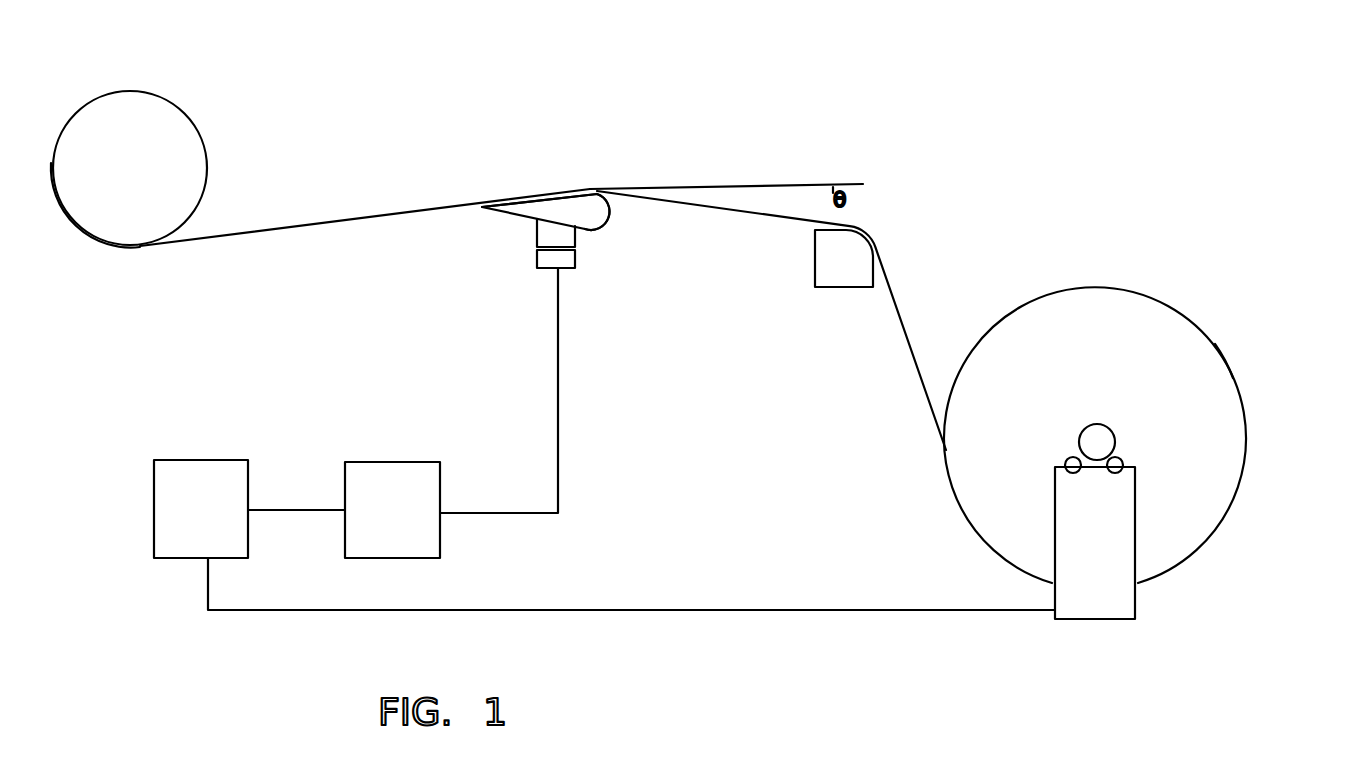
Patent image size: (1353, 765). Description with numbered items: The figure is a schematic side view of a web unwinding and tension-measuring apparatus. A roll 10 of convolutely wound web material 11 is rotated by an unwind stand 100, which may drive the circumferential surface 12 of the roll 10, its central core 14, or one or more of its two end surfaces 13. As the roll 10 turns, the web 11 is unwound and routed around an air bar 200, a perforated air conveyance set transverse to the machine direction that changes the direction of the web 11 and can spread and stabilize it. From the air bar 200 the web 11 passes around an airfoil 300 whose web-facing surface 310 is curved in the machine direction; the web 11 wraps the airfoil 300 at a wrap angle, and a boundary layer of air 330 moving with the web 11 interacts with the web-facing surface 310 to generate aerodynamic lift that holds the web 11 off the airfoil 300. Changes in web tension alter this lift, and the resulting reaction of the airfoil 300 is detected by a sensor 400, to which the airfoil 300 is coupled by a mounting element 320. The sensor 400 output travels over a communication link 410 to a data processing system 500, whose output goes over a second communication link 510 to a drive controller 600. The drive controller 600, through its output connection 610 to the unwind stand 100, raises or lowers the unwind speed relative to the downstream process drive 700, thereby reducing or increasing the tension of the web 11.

The roll 10 is at (1097, 305).
The web material 11 is at (907, 322).
The circumferential surface 12 is at (1225, 363).
The end surfaces 13 is at (1193, 435).
The central core 14 is at (1078, 443).
The unwind stand 100 is at (1102, 608).
The air bar 200 is at (837, 282).
The airfoil 300 is at (583, 218).
The web-facing surface 310 is at (520, 197).
The support stem 320 is at (532, 223).
The boundary layer of air 330 is at (545, 195).
The sensor 400 is at (570, 265).
The communication link 410 is at (558, 420).
The data processing system 500 is at (382, 460).
The second communication link 510 is at (287, 512).
The drive controller 600 is at (190, 460).
The sensor signal line 610 is at (662, 607).
The downstream process drive 700 is at (145, 90).